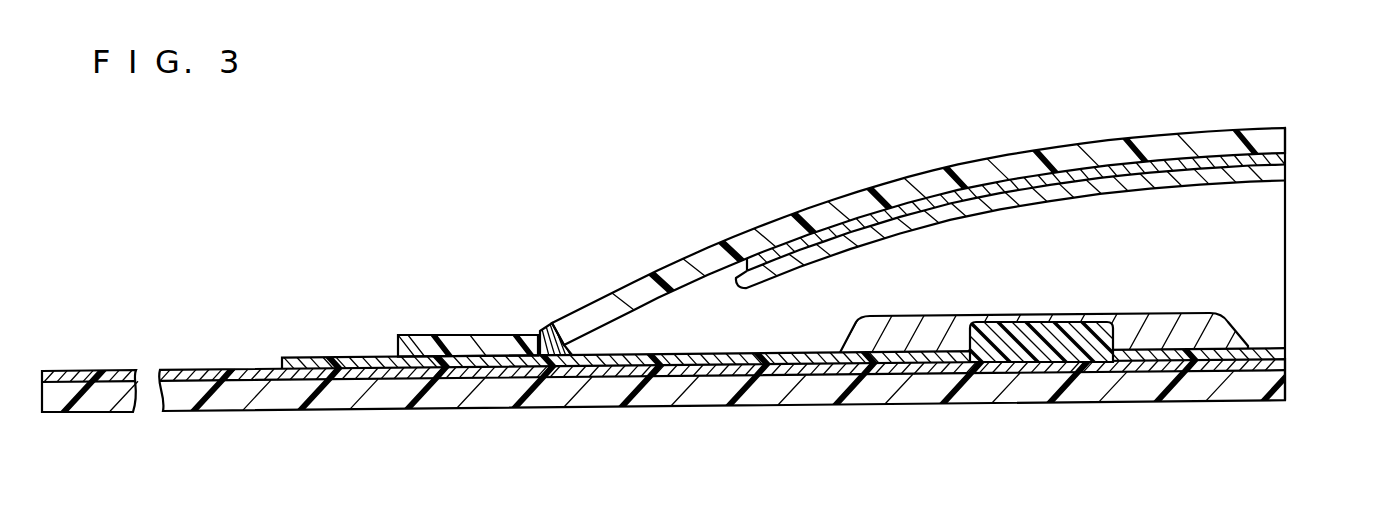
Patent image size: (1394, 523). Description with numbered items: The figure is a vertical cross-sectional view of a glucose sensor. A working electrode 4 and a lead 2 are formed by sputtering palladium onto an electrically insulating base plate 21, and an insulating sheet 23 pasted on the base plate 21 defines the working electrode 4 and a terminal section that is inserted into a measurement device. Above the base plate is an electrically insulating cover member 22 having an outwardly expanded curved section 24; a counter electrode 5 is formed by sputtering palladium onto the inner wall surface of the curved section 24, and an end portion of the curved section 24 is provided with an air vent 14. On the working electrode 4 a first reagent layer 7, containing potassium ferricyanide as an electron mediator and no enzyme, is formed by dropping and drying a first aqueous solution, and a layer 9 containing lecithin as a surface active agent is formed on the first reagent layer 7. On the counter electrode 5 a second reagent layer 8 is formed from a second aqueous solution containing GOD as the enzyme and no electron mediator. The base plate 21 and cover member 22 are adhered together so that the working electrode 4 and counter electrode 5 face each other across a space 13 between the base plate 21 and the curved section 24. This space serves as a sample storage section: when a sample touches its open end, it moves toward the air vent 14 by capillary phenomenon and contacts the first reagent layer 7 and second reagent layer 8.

The lead 2 is at (204, 366).
The base plate 21 is at (289, 395).
The working electrode 4 is at (1027, 365).
The insulating sheet 23 is at (308, 355).
The cover member 22 is at (485, 336).
The air vent 14 is at (577, 330).
The curved section 24 is at (921, 183).
The counter electrode 5 is at (1277, 160).
The second reagent layer 8 is at (1280, 177).
The gap 13 is at (1257, 240).
The layer containing surface active agent 9 is at (1223, 315).
The first reagent layer 7 is at (1073, 322).